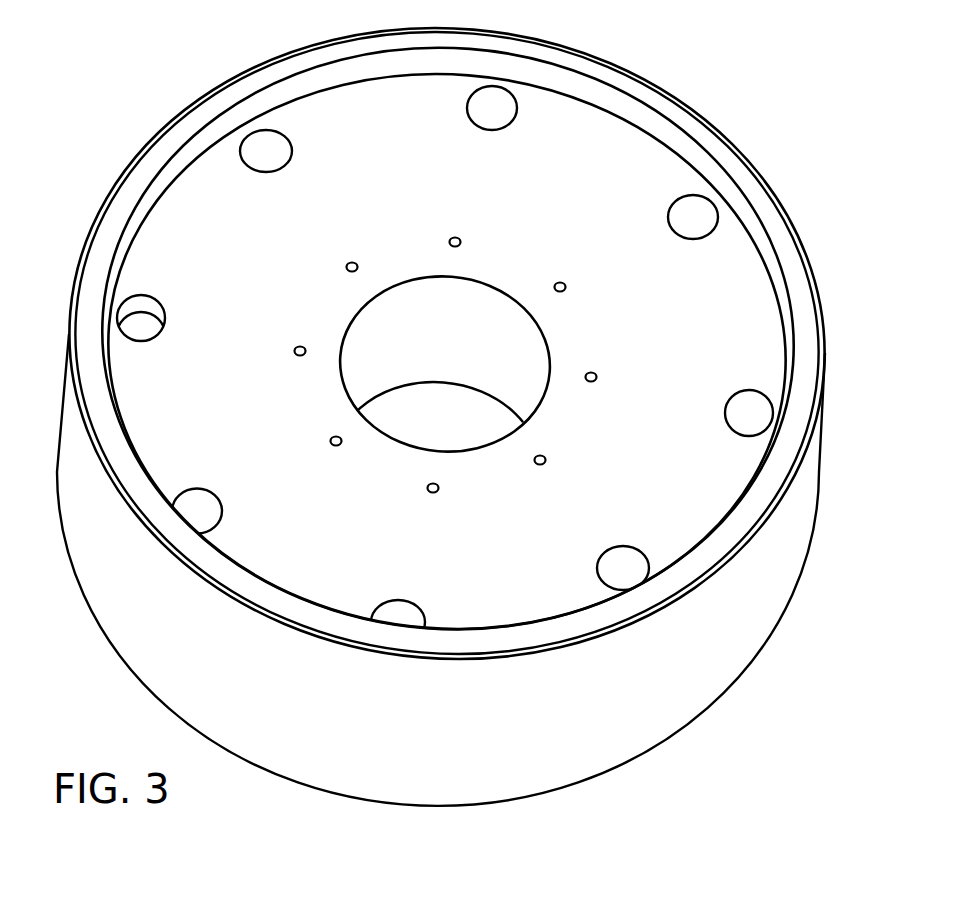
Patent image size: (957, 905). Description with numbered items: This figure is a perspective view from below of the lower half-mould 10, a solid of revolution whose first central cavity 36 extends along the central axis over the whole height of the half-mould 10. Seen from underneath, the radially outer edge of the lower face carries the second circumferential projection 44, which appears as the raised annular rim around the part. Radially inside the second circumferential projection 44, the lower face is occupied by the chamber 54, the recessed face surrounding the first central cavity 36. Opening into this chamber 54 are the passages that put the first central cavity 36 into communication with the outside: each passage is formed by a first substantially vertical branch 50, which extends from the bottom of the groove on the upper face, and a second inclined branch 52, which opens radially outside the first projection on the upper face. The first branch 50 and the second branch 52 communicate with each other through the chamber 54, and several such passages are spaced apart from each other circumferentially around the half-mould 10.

The lower half-mould 10 is at (820, 516).
The first central cavity 36 is at (489, 347).
The second circumferential projection 44 is at (765, 212).
The first substantially vertical branch 50 is at (300, 351).
The second inclined branch 52 is at (503, 105).
The chamber 54 is at (580, 207).